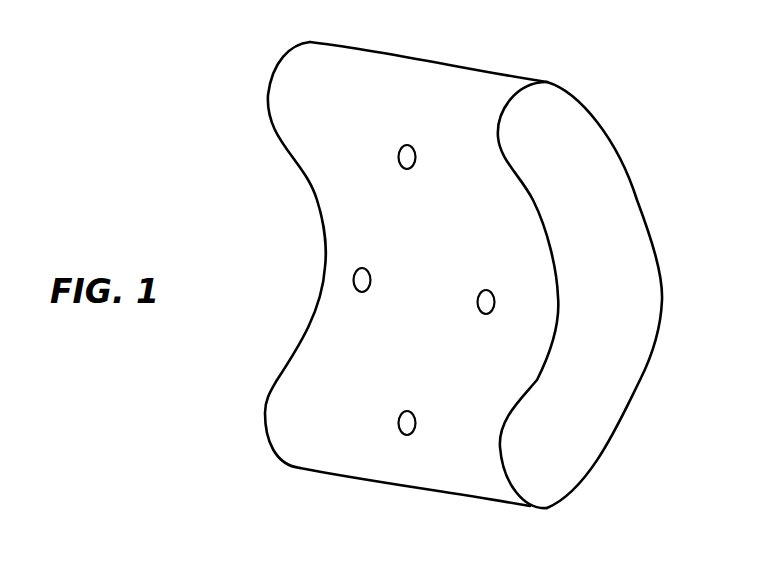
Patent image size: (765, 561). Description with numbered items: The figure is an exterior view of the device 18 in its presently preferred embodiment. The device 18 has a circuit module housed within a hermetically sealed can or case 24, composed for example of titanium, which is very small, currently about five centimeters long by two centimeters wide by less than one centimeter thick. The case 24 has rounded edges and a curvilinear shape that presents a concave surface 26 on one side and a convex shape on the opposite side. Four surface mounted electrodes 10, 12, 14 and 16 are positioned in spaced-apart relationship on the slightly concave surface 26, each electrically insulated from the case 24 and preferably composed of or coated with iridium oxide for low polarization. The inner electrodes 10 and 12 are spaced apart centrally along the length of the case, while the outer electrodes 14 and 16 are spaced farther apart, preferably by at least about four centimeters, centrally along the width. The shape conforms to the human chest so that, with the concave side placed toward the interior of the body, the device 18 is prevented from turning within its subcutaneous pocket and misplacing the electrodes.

The inner electrode 10 is at (365, 268).
The inner electrode 12 is at (489, 290).
The outer electrode 14 is at (410, 145).
The outer electrode 16 is at (410, 411).
The device 18 is at (447, 267).
The case 24 is at (610, 185).
The concave surface 26 is at (281, 88).